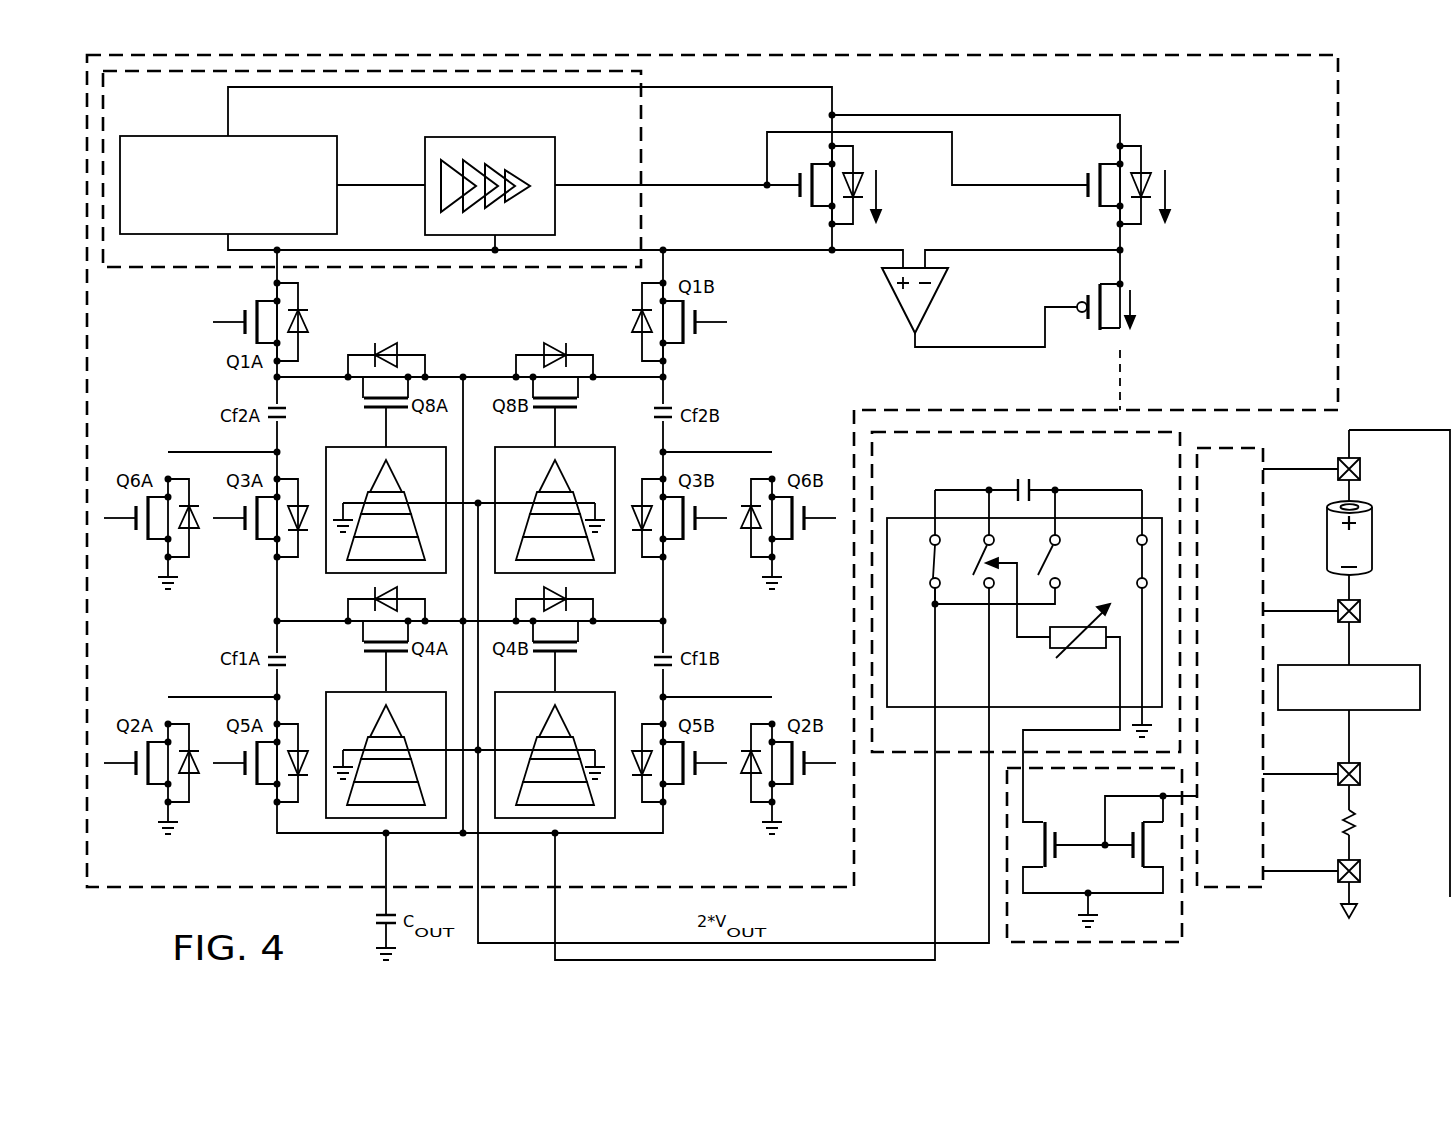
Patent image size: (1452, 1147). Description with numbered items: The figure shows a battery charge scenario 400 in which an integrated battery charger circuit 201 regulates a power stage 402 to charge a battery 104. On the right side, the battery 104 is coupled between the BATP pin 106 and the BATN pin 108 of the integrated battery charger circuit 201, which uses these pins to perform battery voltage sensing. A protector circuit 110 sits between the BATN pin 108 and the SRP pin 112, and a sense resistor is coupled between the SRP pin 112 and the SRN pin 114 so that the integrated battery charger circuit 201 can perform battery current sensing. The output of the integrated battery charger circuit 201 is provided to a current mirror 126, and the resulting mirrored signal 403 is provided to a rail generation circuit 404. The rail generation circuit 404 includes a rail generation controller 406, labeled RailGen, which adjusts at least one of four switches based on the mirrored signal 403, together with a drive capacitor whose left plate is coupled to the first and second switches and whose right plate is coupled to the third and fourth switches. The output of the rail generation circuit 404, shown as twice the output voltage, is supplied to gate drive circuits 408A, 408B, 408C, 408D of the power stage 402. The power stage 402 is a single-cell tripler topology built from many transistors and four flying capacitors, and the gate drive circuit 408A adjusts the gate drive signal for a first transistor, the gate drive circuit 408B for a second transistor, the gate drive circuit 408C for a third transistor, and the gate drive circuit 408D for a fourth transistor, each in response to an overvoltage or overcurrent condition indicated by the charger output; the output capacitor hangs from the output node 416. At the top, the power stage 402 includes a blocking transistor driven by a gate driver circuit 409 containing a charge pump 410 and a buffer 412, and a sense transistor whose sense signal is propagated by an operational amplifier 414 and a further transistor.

The battery charge scenario 400 is at (1398, 111).
The power stage 402 is at (920, 248).
The mirrored signal 403 is at (1024, 802).
The rail generation circuit 404 is at (1026, 626).
The rail generation controller 406 is at (1077, 623).
The gate drive circuit 408A is at (338, 691).
The gate drive circuit 408B is at (603, 691).
The gate drive circuit 408C is at (338, 446).
The gate drive circuit 408D is at (603, 446).
The gate driver circuit 409 is at (164, 273).
The charge pump 410 is at (174, 136).
The buffer 412 is at (556, 157).
The operational amplifier 414 is at (900, 313).
The output node 416 is at (380, 838).
The current mirror 126 is at (1062, 687).
The integrated battery charger circuit 201 is at (1251, 684).
The BATP pin 106 is at (1362, 463).
The battery 104 is at (1373, 539).
The BATN pin 108 is at (1362, 604).
The protector circuit 110 is at (1382, 712).
The SRP pin 112 is at (1362, 782).
The SRN pin 114 is at (1362, 880).